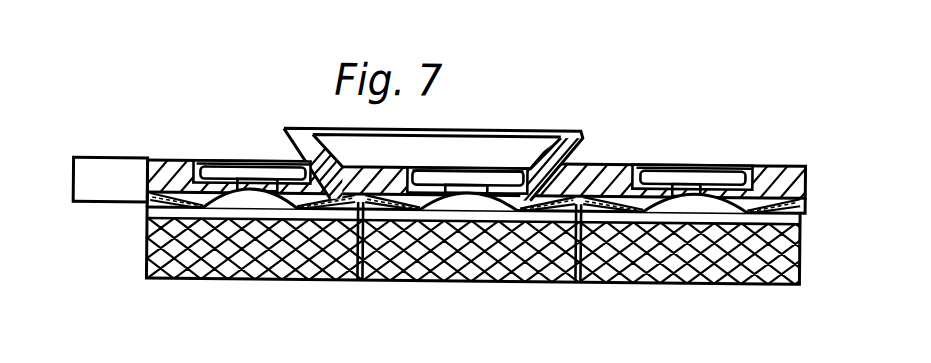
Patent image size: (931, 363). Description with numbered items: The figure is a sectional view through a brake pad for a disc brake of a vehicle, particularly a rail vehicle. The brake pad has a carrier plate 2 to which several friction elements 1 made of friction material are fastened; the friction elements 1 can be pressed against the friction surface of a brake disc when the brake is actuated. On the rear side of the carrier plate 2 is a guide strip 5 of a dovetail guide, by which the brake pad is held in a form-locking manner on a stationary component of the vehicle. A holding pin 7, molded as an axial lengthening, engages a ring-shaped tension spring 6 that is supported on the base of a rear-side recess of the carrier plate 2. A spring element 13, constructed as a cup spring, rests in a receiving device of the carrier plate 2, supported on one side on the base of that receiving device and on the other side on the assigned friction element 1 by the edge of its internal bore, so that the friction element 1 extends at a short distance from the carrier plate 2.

The friction element 1 is at (190, 240).
The carrier plate 2 is at (776, 160).
The guide strip 5 is at (552, 148).
The tension spring 6 is at (217, 178).
The holding pin 7 is at (253, 160).
The spring element 13 is at (170, 192).